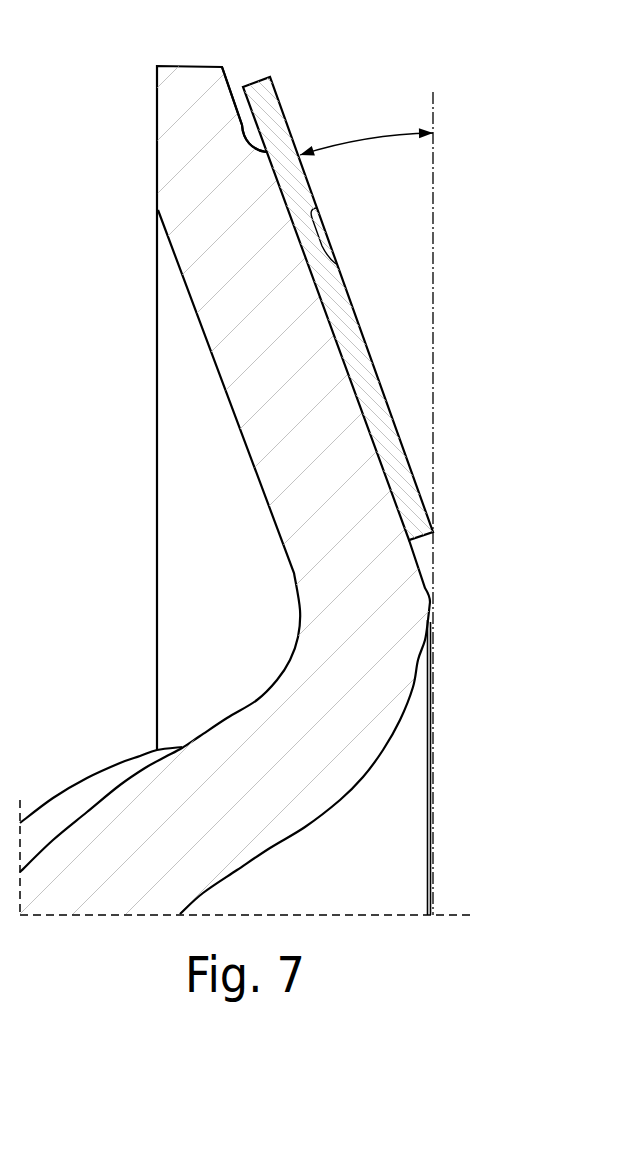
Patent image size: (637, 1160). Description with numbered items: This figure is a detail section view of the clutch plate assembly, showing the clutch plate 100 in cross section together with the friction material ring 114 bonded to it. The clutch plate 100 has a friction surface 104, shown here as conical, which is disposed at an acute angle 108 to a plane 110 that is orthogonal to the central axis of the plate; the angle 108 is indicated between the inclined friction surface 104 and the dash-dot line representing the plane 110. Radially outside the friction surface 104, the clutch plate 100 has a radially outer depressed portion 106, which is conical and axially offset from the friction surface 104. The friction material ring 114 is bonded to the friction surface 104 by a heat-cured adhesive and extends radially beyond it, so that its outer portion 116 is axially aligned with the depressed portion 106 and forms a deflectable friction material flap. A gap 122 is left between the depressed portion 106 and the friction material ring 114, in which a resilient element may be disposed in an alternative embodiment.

The clutch plate 100 is at (343, 568).
The friction surface 104 is at (340, 358).
The radially outer depressed portion 106 is at (238, 108).
The acute angle 108 is at (371, 138).
The plane 110 is at (433, 186).
The friction material ring 114 is at (400, 467).
The outer portion 116 is at (272, 113).
The gap 122 is at (238, 93).